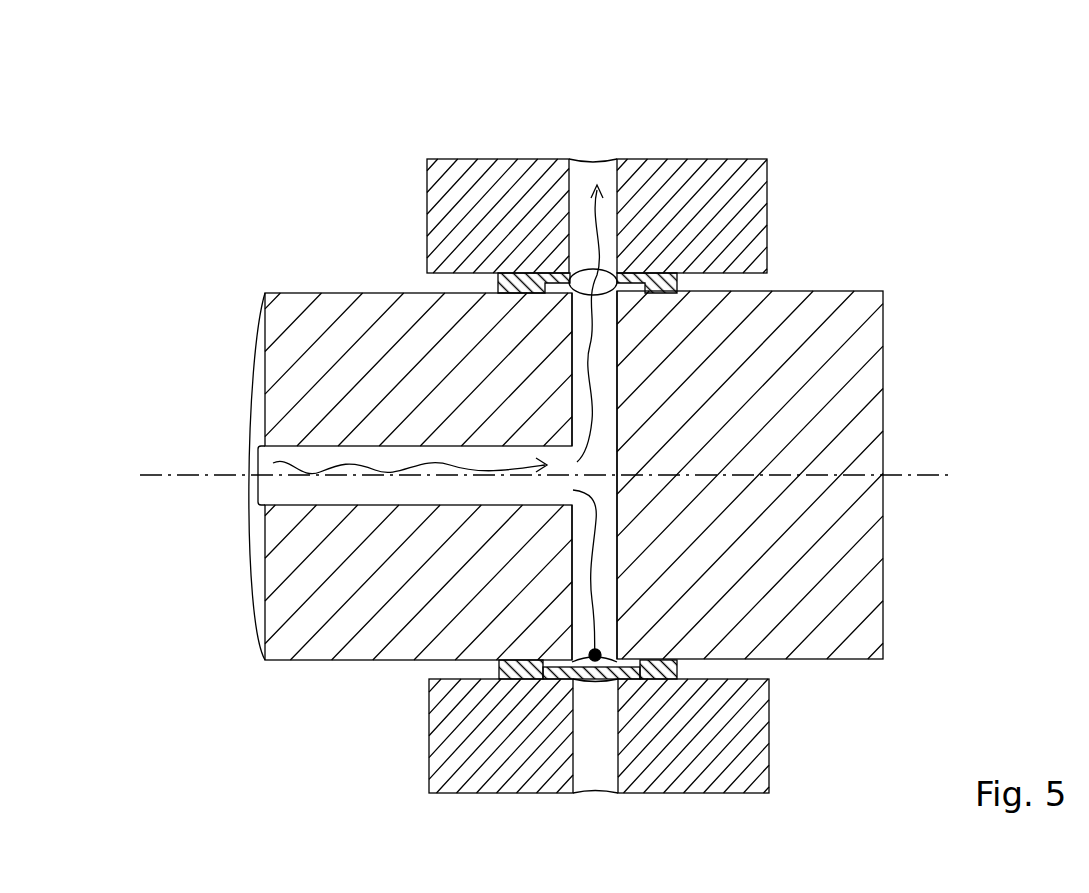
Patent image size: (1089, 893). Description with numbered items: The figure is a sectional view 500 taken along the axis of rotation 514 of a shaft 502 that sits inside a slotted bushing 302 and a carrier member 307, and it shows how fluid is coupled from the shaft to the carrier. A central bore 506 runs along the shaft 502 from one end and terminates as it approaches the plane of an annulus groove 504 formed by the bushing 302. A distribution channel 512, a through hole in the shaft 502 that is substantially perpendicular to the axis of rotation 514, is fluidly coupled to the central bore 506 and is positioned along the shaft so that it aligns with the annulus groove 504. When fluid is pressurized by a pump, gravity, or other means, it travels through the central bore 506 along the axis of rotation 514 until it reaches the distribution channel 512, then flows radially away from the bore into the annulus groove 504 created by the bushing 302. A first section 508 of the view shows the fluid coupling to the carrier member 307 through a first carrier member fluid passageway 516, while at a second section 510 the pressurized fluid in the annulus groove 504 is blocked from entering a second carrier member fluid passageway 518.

The sectional view 500 is at (298, 146).
The slotted bushing 302 is at (500, 282).
The carrier member 307 is at (497, 180).
The shaft 502 is at (325, 588).
The annulus groove 504 is at (593, 654).
The central bore 506 is at (270, 492).
The first section 508 is at (800, 202).
The second section 510 is at (408, 753).
The distribution channel 512 is at (607, 387).
The axis of rotation 514 is at (160, 475).
The first carrier member fluid passageway 516 is at (603, 165).
The second carrier member fluid passageway 518 is at (607, 775).